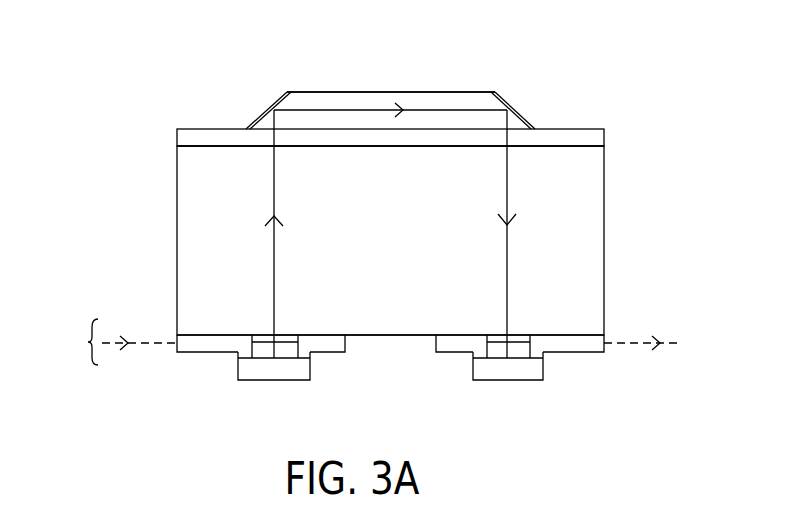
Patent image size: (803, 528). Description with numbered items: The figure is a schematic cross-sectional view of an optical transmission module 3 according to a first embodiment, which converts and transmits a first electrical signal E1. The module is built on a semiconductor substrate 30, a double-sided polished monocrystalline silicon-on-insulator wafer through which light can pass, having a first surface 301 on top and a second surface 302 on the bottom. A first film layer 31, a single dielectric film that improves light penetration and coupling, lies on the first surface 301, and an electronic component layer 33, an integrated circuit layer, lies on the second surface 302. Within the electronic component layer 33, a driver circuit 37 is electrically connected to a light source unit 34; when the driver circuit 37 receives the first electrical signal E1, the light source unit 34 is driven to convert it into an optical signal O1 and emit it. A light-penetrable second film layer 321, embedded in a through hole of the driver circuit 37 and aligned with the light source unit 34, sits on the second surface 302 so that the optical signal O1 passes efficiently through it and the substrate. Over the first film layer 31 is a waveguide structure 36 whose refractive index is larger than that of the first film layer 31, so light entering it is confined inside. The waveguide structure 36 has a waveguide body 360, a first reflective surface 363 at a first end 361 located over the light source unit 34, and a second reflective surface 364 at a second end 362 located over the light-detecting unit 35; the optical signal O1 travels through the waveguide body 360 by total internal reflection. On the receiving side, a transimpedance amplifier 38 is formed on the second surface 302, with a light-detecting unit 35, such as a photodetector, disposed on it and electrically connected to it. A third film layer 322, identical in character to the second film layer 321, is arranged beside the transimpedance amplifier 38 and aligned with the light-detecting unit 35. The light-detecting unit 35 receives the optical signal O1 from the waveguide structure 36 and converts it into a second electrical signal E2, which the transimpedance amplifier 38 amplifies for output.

The optical transmission module 3 is at (605, 65).
The semiconductor substrate 30 is at (588, 275).
The first surface 301 is at (585, 147).
The second surface 302 is at (588, 332).
The first film layer 31 is at (585, 138).
The electronic component layer 33 is at (77, 342).
The light source unit 34 is at (278, 368).
The light-detecting unit 35 is at (505, 370).
The waveguide structure 36 is at (392, 90).
The waveguide body 360 is at (420, 103).
The first end 361 is at (270, 120).
The second end 362 is at (515, 122).
The first reflective surface 363 is at (282, 91).
The second reflective surface 364 is at (502, 92).
The driver circuit 37 is at (220, 342).
The transimpedance amplifier 38 is at (563, 342).
The second film layer 321 is at (288, 340).
The third film layer 322 is at (485, 342).
The optical signal O1 is at (362, 112).
The first electrical signal E1 is at (157, 345).
The second electrical signal E2 is at (623, 346).